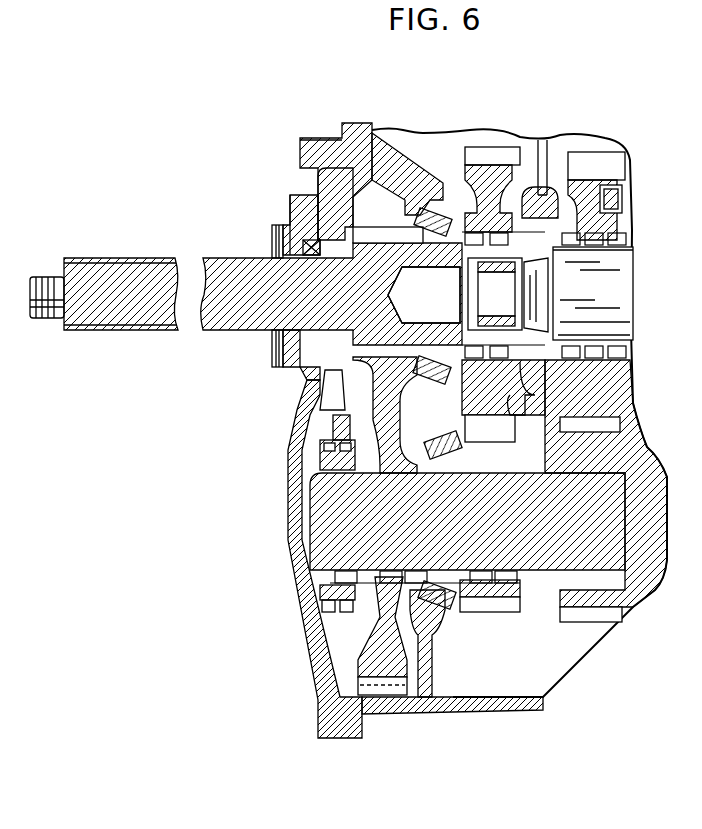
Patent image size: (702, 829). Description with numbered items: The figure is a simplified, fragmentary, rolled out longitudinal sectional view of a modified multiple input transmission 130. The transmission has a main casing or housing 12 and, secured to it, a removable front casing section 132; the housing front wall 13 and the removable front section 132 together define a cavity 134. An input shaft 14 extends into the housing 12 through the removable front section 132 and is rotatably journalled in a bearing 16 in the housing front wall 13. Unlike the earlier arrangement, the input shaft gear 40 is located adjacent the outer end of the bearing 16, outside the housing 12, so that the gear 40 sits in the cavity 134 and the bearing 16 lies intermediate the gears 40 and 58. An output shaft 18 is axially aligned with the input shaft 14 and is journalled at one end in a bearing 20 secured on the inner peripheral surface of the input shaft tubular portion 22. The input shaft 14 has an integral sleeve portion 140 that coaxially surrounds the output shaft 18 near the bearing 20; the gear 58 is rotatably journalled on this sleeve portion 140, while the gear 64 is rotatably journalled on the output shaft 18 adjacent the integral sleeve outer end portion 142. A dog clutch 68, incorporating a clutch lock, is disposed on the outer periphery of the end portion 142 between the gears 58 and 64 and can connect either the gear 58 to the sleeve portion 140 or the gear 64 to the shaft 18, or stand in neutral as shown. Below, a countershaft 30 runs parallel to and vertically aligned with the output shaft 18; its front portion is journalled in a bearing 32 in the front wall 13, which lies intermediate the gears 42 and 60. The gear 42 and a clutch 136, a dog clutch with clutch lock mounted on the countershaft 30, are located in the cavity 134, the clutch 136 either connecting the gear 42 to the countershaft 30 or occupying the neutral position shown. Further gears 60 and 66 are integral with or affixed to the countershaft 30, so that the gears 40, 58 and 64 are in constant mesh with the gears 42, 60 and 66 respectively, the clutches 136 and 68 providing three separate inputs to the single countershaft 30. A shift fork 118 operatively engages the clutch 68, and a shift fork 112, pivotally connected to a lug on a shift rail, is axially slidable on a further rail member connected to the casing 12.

The casing or housing 12 is at (357, 125).
The housing front wall 13 is at (425, 640).
The input shaft 14 is at (110, 262).
The bearing 16 is at (440, 208).
The output shaft 18 is at (617, 282).
The bearing 20 is at (490, 320).
The input shaft tubular portion 22 is at (442, 333).
The countershaft 30 is at (325, 520).
The bearing 32 is at (440, 605).
The input shaft gear 40 is at (373, 233).
The gear 42 is at (383, 683).
The gear 58 is at (482, 148).
The countershaft gear 60 is at (505, 603).
The gear 64 is at (590, 165).
The countershaft gear 66 is at (603, 618).
The dog clutch 68 is at (535, 215).
The shift fork 112 is at (330, 383).
The shift fork 118 is at (541, 150).
The multiple input transmission 130 is at (292, 708).
The removable front casing section 132 is at (310, 148).
The cavity 134 is at (327, 197).
The clutch 136 is at (323, 600).
The integral sleeve portion 140 is at (468, 260).
The integral sleeve outer end portion 142 is at (540, 250).